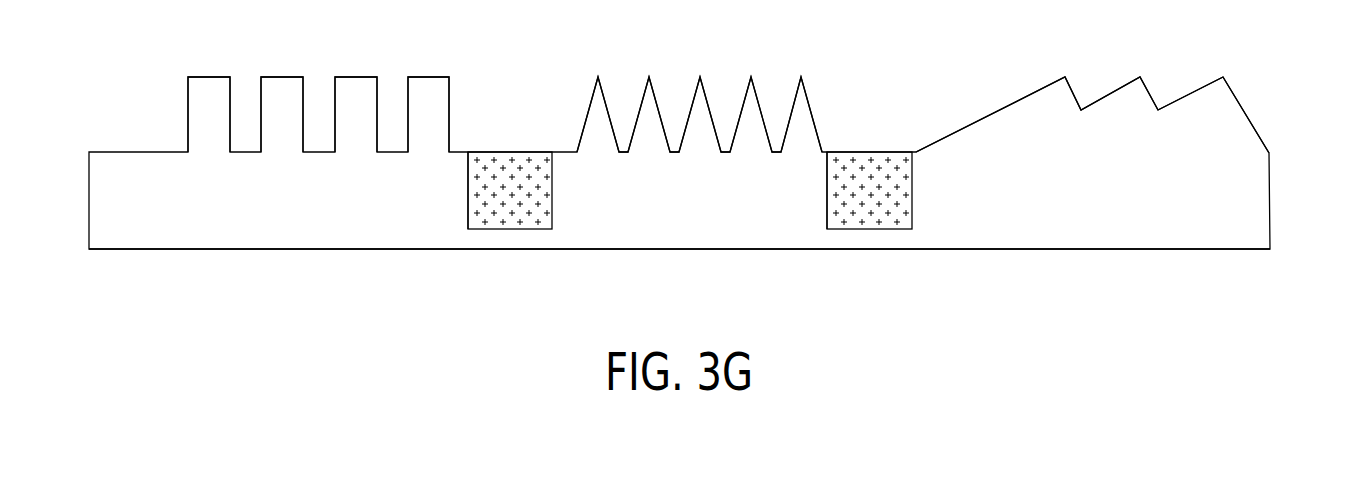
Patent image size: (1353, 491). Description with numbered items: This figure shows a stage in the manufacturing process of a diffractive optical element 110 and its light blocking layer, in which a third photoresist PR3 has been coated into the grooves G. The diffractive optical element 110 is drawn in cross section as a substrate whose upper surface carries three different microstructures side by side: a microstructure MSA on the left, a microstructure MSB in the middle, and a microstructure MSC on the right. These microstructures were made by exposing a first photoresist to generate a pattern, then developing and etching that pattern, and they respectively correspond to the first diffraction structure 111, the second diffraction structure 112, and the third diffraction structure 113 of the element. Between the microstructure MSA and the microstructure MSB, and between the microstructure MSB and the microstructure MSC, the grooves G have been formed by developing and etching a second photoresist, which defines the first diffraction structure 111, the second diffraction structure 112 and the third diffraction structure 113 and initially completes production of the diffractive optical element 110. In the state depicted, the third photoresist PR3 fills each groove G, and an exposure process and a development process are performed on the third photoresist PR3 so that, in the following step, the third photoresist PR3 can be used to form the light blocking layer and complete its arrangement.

The diffractive optical element 110 is at (1272, 200).
The first diffraction structure 111 is at (295, 232).
The second diffraction structure 112 is at (691, 232).
The third diffraction structure 113 is at (1098, 230).
The microstructure MSA is at (357, 92).
The microstructure MSB is at (597, 100).
The microstructure MSC is at (1233, 110).
The third photoresist PR3 is at (518, 160).
The groove G is at (479, 178).